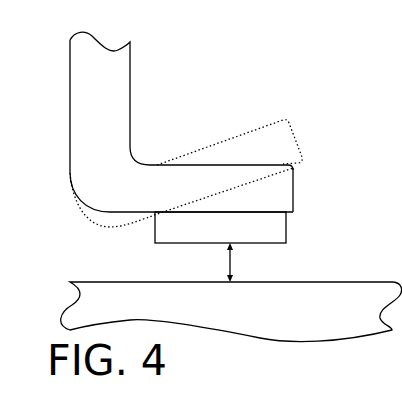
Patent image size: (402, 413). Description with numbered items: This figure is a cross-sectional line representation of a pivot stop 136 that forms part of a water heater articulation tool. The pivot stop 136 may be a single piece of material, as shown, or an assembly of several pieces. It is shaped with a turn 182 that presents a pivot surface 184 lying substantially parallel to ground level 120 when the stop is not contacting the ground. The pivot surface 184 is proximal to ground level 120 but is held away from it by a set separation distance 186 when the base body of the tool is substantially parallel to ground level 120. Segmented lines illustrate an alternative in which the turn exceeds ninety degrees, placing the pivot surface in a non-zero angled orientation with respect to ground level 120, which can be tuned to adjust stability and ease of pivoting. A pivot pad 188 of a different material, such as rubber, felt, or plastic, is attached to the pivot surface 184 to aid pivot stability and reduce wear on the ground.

The pivot stop 136 is at (202, 34).
The turn 182 is at (66, 171).
The pivot surface 184 is at (296, 218).
The set separation distance 186 is at (252, 262).
The pivot pad 188 is at (240, 238).
The ground level 120 is at (83, 282).